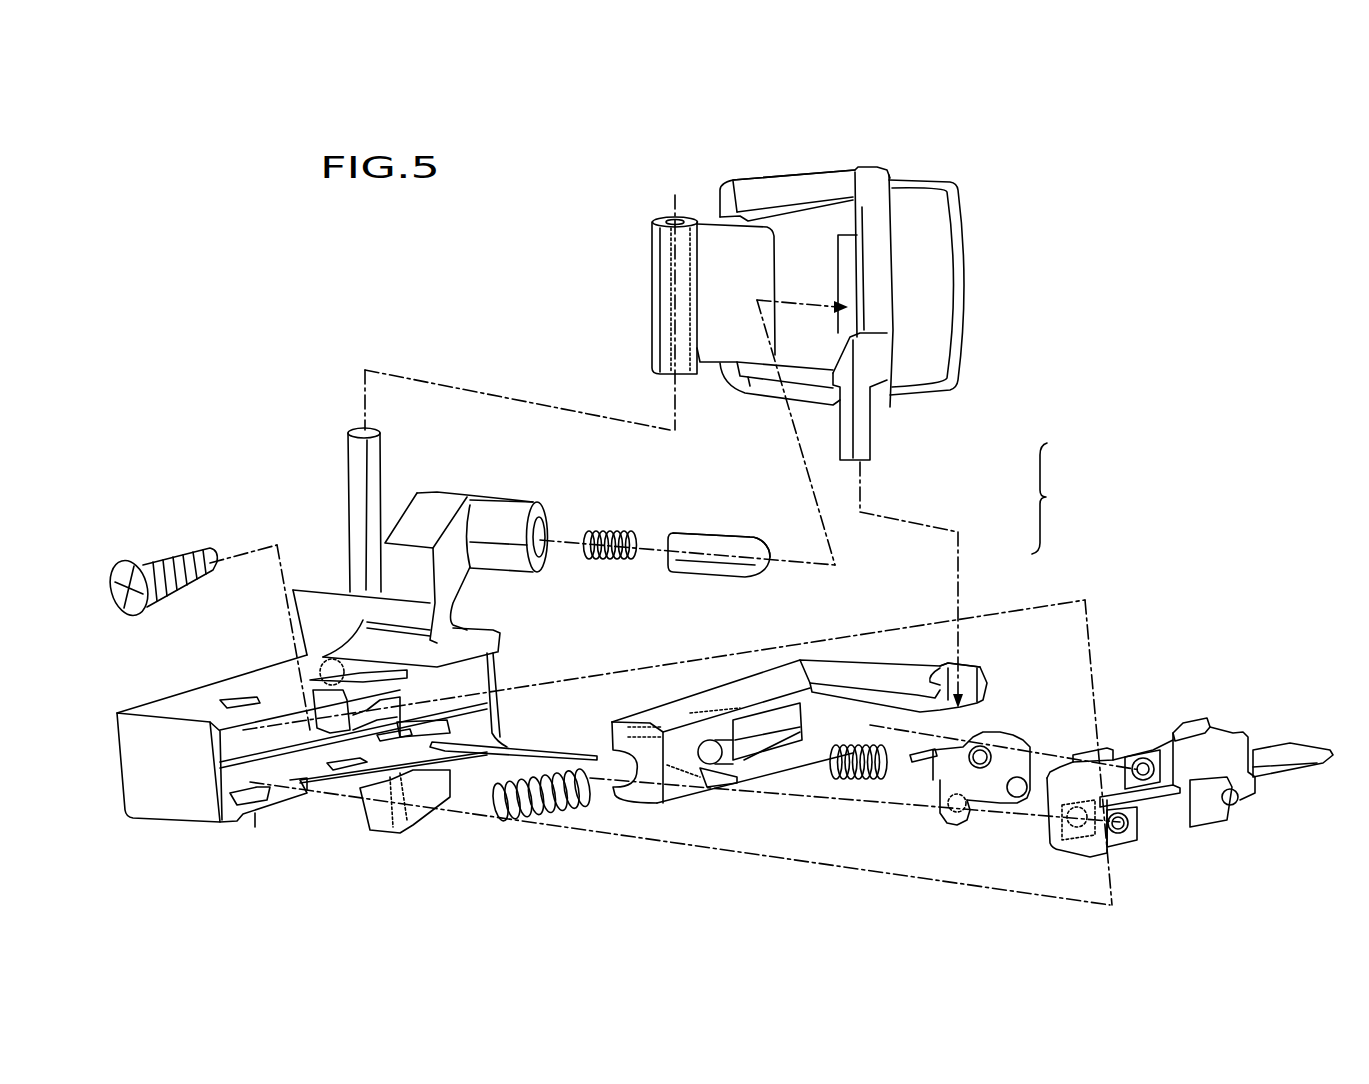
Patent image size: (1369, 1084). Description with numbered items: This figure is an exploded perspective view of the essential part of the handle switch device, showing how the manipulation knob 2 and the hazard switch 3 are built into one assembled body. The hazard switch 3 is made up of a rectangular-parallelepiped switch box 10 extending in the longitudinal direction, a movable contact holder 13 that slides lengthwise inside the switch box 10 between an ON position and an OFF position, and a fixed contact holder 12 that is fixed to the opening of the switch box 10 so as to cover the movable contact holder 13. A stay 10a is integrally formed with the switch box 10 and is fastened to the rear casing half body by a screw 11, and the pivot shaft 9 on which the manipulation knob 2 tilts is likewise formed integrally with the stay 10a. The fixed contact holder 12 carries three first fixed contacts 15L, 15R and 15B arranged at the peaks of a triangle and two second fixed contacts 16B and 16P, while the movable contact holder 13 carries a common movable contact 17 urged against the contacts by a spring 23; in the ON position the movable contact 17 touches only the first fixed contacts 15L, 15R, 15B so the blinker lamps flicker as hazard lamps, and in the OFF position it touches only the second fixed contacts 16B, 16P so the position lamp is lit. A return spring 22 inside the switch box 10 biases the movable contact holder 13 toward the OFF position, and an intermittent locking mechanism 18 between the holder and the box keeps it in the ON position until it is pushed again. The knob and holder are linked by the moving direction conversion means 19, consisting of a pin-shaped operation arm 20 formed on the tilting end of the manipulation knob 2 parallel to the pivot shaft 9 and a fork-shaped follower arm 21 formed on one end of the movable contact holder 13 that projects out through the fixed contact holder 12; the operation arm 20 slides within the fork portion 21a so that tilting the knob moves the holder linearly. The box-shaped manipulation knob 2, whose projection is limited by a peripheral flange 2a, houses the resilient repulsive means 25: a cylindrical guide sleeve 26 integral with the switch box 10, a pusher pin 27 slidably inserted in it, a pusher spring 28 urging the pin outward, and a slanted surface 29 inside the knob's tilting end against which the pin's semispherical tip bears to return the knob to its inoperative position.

The manipulation knob 2 is at (950, 273).
The flange 2a is at (762, 173).
The hazard switch 3 is at (1173, 638).
The pivot shaft 9 is at (352, 470).
The switch box 10 is at (205, 687).
The stay 10a is at (303, 620).
The screw 11 is at (168, 560).
The fixed contact holder 12 is at (1288, 780).
The movable contact holder 13 is at (672, 793).
The first fixed contact 15B is at (1120, 747).
The first fixed contact 15L is at (1083, 830).
The first fixed contact 15R is at (1148, 833).
The second fixed contact 16B is at (1195, 733).
The second fixed contact 16P is at (1213, 813).
The movable contact 17 is at (983, 793).
The intermittent locking mechanism 18 is at (772, 767).
The moving direction conversion means 19 is at (1058, 498).
The operation arm 20 is at (867, 437).
The follower arm 21 is at (895, 683).
The fork portion 21a is at (962, 688).
The return spring 22 is at (557, 818).
The spring 23 is at (852, 783).
The resilient repulsive means 25 is at (714, 527).
The guide sleeve 26 is at (512, 562).
The pusher pin 27 is at (718, 558).
The pusher spring 28 is at (608, 562).
The slanted surface 29 is at (843, 282).